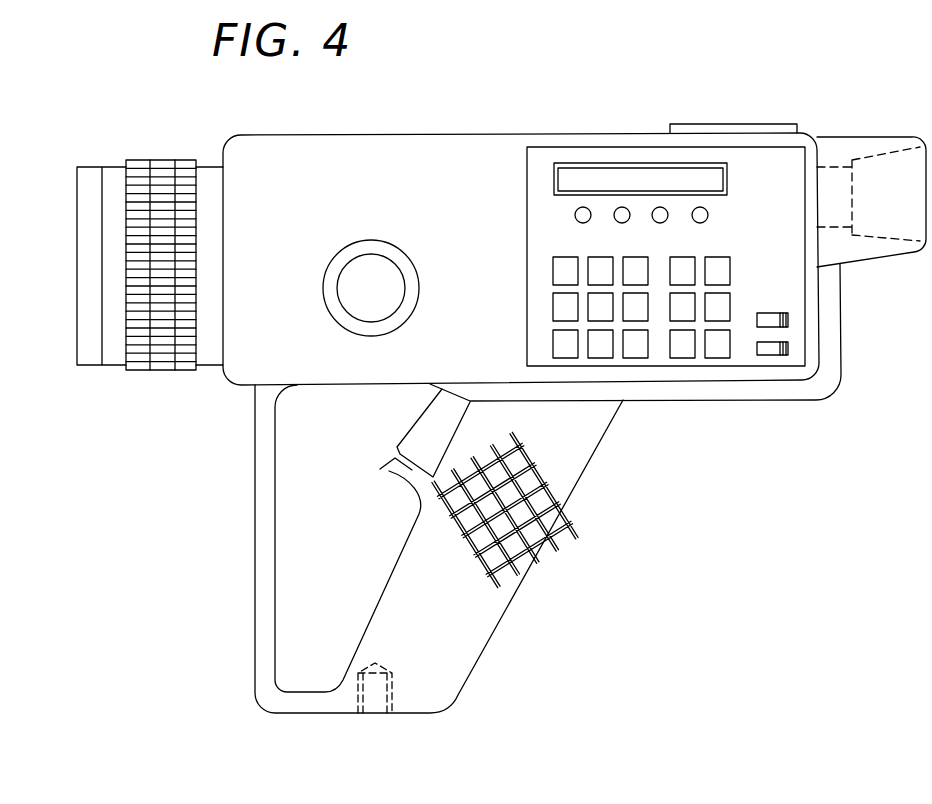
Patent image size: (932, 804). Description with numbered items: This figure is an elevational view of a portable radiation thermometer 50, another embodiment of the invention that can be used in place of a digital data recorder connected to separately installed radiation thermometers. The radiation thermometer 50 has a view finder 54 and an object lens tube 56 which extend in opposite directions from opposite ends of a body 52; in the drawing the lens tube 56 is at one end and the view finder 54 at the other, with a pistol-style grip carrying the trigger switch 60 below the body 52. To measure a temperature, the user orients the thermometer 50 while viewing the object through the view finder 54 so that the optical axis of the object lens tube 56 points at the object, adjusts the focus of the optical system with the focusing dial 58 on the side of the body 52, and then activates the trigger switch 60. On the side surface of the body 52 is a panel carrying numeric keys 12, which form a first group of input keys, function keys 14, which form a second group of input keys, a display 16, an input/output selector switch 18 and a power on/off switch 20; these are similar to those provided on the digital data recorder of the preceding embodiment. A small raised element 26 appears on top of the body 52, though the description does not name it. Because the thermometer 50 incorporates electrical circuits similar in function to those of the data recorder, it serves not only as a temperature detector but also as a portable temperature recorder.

The numeric keys 12 is at (553, 253).
The function keys 14 is at (727, 253).
The display 16 is at (715, 178).
The input/output selector switch 18 is at (783, 313).
The power on/off switch 20 is at (785, 355).
The top aperture 26 is at (719, 124).
The portable radiation thermometer 50 is at (233, 412).
The body 52 is at (477, 152).
The view finder 54 is at (895, 247).
The object lens tube 56 is at (112, 173).
The focusing dial 58 is at (390, 290).
The trigger switch 60 is at (425, 437).